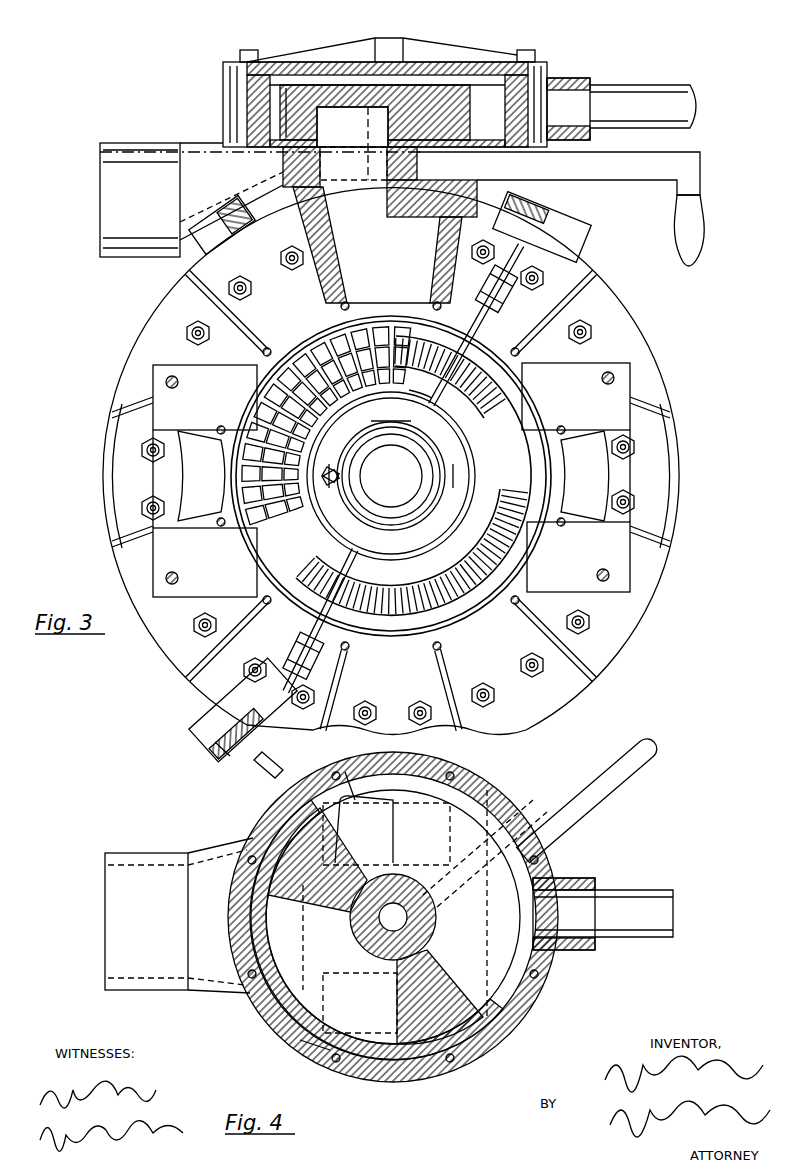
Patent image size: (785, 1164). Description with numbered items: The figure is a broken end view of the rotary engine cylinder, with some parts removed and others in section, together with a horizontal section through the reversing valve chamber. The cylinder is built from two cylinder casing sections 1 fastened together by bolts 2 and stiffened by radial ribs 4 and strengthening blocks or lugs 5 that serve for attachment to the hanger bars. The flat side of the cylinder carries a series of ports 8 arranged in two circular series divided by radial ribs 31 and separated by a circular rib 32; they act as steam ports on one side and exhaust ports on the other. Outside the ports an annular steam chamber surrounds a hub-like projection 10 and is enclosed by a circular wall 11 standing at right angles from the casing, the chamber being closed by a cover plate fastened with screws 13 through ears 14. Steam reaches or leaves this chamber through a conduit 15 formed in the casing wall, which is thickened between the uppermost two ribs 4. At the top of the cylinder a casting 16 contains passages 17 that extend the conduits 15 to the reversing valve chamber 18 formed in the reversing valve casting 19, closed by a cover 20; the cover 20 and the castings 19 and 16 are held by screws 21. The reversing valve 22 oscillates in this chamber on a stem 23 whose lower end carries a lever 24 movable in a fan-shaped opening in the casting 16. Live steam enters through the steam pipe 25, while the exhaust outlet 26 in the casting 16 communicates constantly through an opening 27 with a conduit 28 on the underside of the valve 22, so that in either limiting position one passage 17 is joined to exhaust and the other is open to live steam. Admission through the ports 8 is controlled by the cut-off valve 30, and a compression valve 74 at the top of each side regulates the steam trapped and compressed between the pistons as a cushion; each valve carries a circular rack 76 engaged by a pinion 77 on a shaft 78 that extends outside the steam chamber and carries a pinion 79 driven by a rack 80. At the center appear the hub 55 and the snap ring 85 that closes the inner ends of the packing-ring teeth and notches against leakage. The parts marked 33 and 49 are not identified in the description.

In FIG. 3, the cylinder casing sections 1 is at (150, 333).
In FIG. 3, the bolts 2 is at (585, 333).
In FIG. 3, the radial ribs 4 is at (653, 413).
In FIG. 3, the strengthening blocks or lugs 5 is at (655, 483).
In FIG. 3, the ports 8 is at (326, 426).
In FIG. 3, the hub-like projection 10 is at (391, 476).
In FIG. 3, the circular wall 11 is at (215, 480).
In FIG. 3, the screws 13 is at (221, 427).
In FIG. 3, the ears 14 is at (438, 646).
In FIG. 3, the conduit 15 is at (388, 282).
In FIG. 4, the conduit 15 is at (345, 775).
In FIG. 3, the casting 16 is at (420, 163).
In FIG. 4, the casting 16 is at (245, 845).
In FIG. 3, the passages 17 is at (353, 162).
In FIG. 4, the passages 17 is at (395, 911).
In FIG. 3, the reversing valve chamber 18 is at (498, 58).
In FIG. 4, the reversing valve chamber 18 is at (470, 812).
In FIG. 3, the reversing valve casting 19 is at (228, 93).
In FIG. 4, the reversing valve casting 19 is at (453, 773).
In FIG. 3, the cover 20 is at (300, 52).
In FIG. 3, the screws 21 is at (550, 62).
In FIG. 4, the screws 21 is at (443, 1083).
In FIG. 3, the reversing valve 22 is at (435, 95).
In FIG. 4, the reversing valve 22 is at (470, 1055).
In FIG. 3, the stem 23 is at (378, 172).
In FIG. 4, the stem 23 is at (407, 922).
In FIG. 3, the lever 24 is at (703, 187).
In FIG. 4, the lever 24 is at (570, 805).
In FIG. 3, the steam pipe 25 is at (643, 100).
In FIG. 4, the steam pipe 25 is at (640, 940).
In FIG. 3, the exhaust outlet 26 is at (103, 195).
In FIG. 4, the exhaust outlet 26 is at (176, 920).
In FIG. 3, the opening 27 is at (285, 163).
In FIG. 4, the opening 27 is at (270, 990).
In FIG. 3, the conduit 28 is at (340, 112).
In FIG. 4, the conduit 28 is at (300, 1040).
In FIG. 3, the cut-off valve 30 is at (391, 494).
In FIG. 3, the radial ribs 31 is at (328, 453).
In FIG. 3, the circular rib 32 is at (330, 460).
In FIG. 3, the shaft opening 33 is at (391, 476).
In FIG. 3, the cover plate screw 49 is at (165, 382).
In FIG. 3, the hub 55 is at (391, 475).
In FIG. 3, the compression valve 74 is at (510, 447).
In FIG. 3, the circular rack 76 is at (413, 475).
In FIG. 3, the pinion 77 is at (403, 468).
In FIG. 3, the shaft 78 is at (575, 262).
In FIG. 3, the pinion 79 is at (268, 762).
In FIG. 3, the rack 80 is at (218, 745).
In FIG. 3, the snap ring 85 is at (411, 405).